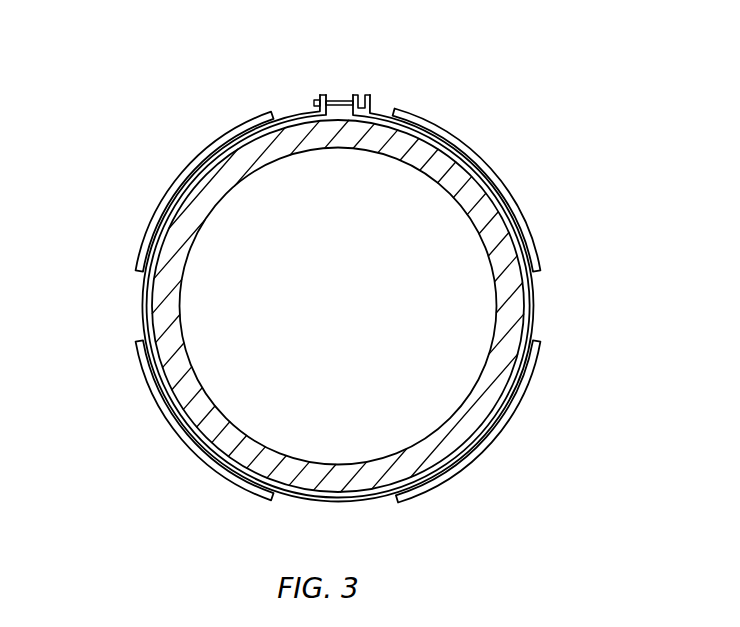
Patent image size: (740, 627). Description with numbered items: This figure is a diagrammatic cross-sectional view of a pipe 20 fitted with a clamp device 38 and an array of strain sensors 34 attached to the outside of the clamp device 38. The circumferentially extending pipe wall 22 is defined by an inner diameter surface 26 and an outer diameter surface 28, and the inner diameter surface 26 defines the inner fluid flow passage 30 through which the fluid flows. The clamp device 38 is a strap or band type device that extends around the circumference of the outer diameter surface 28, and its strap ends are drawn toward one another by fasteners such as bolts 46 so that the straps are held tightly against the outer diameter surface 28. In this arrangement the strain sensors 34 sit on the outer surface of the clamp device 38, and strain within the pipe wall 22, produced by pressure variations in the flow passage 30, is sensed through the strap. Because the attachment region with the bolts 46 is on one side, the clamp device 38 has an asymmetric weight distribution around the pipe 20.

The pipe 20 is at (476, 172).
The pipe wall 22 is at (191, 403).
The inner diameter surface 26 is at (176, 303).
The outer diameter surface 28 is at (141, 300).
The inner fluid flow passage 30 is at (326, 317).
The strain sensors 34 is at (186, 160).
The clamp device 38 is at (375, 111).
The bolts 46 is at (337, 95).